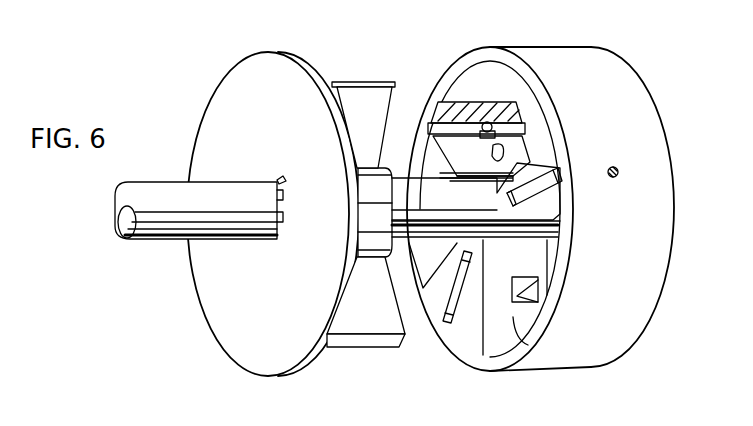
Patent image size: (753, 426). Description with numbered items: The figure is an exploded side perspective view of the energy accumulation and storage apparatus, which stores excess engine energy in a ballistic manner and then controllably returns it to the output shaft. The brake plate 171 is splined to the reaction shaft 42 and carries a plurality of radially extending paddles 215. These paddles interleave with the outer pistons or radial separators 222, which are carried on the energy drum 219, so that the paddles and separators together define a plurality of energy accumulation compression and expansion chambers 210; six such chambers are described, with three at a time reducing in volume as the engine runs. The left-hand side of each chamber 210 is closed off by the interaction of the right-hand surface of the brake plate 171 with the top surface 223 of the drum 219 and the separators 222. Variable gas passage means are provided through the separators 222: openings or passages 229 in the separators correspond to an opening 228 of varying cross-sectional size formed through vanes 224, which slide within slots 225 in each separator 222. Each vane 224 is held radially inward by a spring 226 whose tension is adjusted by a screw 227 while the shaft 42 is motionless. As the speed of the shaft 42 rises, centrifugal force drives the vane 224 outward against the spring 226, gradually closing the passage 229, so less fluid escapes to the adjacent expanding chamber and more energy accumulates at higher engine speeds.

The reaction shaft 42 is at (166, 242).
The brake plate 171 is at (353, 54).
The radially extending paddles 215 is at (360, 347).
The energy drum 219 is at (663, 250).
The energy accumulation compression and expansion chambers 210 is at (540, 347).
The outer pistons or radial separators 222 is at (467, 328).
The top surface of drum 223 is at (545, 210).
The vanes 224 is at (467, 143).
The slots 225 is at (427, 123).
The spring 226 is at (500, 112).
The screw 227 is at (613, 167).
The opening 228 is at (504, 155).
The openings or passages 229 is at (538, 288).